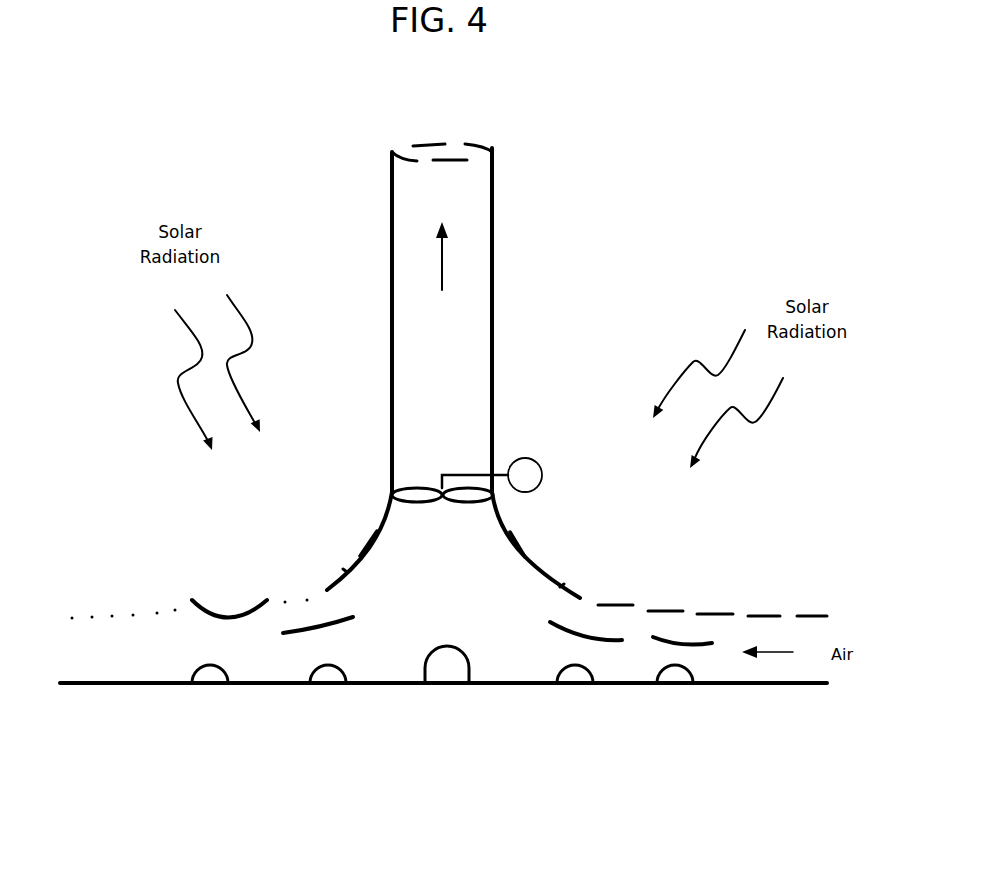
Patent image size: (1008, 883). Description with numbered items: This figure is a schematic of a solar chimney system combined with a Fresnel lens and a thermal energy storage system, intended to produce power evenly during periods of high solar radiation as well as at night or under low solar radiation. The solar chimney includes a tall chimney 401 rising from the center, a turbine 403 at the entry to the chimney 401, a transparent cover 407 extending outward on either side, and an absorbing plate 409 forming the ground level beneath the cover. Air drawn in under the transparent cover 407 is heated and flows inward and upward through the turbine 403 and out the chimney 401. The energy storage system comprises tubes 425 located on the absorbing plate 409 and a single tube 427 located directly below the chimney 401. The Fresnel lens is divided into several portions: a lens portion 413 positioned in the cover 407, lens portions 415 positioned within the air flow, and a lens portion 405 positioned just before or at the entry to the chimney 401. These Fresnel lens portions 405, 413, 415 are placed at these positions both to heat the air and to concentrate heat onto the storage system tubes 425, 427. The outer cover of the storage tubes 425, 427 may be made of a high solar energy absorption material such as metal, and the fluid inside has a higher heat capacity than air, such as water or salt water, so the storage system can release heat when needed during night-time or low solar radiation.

The chimney 401 is at (497, 273).
The turbine 403 is at (418, 486).
The lens portion 405 is at (366, 547).
The transparent cover 407 is at (148, 613).
The absorbing plate 409 is at (757, 685).
The lens portion 413 is at (242, 610).
The lens portions 415 is at (328, 623).
The tubes 425 is at (212, 685).
The tube 427 is at (450, 673).